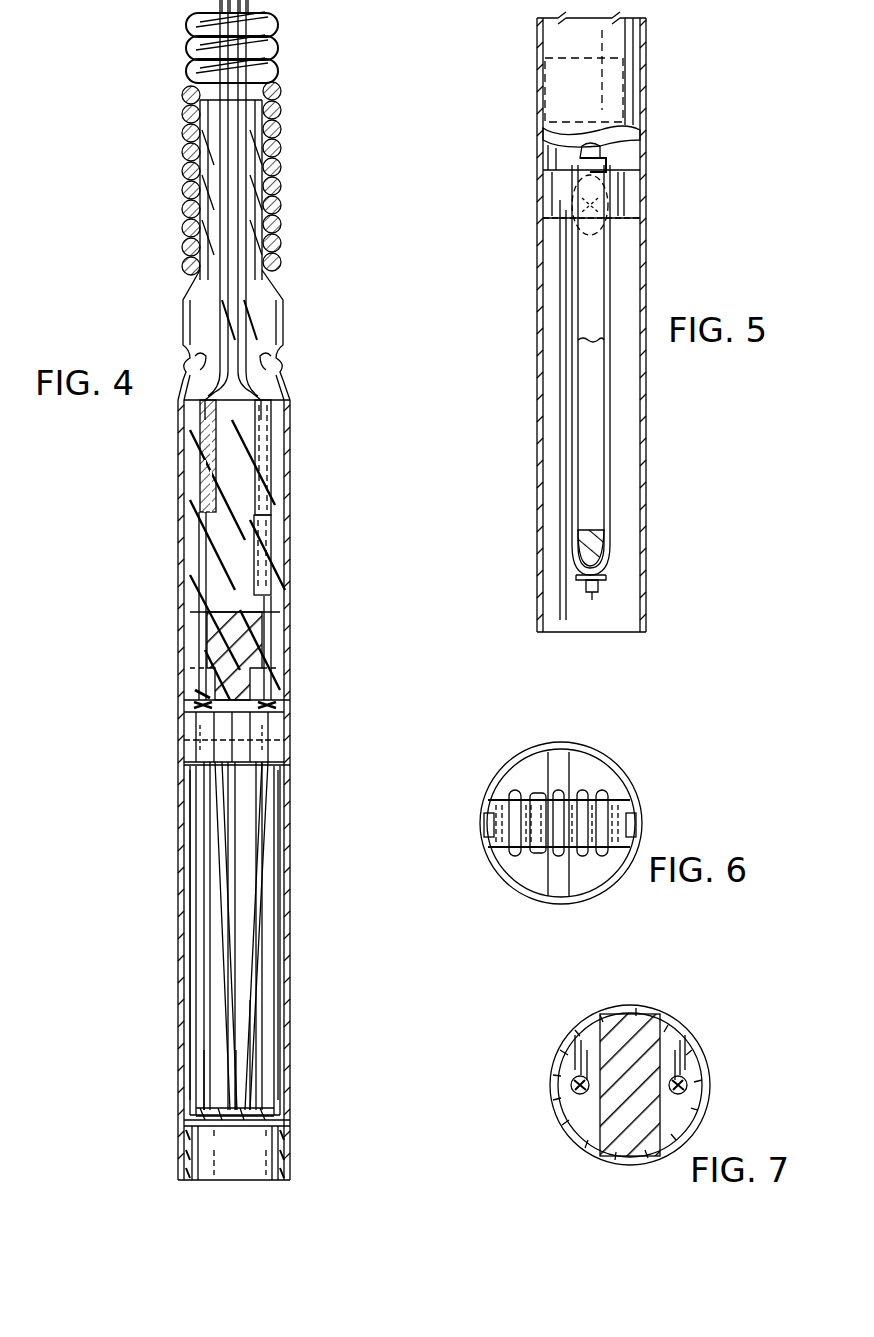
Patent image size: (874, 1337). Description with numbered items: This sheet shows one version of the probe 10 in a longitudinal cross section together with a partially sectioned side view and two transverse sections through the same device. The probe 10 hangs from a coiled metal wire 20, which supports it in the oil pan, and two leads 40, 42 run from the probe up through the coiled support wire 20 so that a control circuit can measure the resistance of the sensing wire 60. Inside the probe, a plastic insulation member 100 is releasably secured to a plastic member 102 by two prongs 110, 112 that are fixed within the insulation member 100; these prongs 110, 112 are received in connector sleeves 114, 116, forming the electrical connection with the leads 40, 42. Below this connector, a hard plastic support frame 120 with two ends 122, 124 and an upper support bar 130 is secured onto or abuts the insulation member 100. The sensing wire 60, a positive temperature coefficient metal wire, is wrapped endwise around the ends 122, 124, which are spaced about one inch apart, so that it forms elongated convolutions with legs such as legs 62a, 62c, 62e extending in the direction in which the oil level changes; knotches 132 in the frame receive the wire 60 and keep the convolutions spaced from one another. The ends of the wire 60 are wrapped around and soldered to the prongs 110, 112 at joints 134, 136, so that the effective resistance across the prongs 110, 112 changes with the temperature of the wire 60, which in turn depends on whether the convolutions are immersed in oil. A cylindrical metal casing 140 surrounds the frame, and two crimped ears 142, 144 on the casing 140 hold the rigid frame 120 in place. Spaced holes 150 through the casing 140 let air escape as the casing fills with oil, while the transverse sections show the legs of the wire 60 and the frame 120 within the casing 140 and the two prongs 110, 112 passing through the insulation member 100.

In FIG. 4, the probe 10 is at (296, 868).
In FIG. 5, the probe 10 is at (590, 322).
In FIG. 6, the probe 10 is at (584, 796).
In FIG. 7, the probe 10 is at (640, 1057).
In FIG. 4, the coiled metal wire 20 is at (284, 236).
In FIG. 4, the lead 40 is at (218, 318).
In FIG. 4, the lead 42 is at (252, 320).
In FIG. 4, the wire 60 is at (260, 992).
In FIG. 5, the wire 60 is at (568, 398).
In FIG. 6, the wire 60 is at (526, 860).
In FIG. 4, the leg 62a is at (200, 1052).
In FIG. 4, the leg 62c is at (240, 1052).
In FIG. 4, the leg 62e is at (258, 1032).
In FIG. 4, the plastic insulation member 100 is at (270, 645).
In FIG. 5, the plastic insulation member 100 is at (638, 88).
In FIG. 7, the plastic insulation member 100 is at (655, 1125).
In FIG. 4, the plastic member 102 is at (278, 500).
In FIG. 4, the prong 110 is at (199, 628).
In FIG. 5, the prong 110 is at (640, 135).
In FIG. 7, the prong 110 is at (572, 1080).
In FIG. 4, the prong 112 is at (272, 648).
In FIG. 7, the prong 112 is at (686, 1082).
In FIG. 4, the connector sleeve 114 is at (200, 555).
In FIG. 4, the connector sleeve 116 is at (265, 570).
In FIG. 4, the hard plastic support frame 120 is at (188, 880).
In FIG. 5, the hard plastic support frame 120 is at (594, 432).
In FIG. 6, the hard plastic support frame 120 is at (560, 790).
In FIG. 4, the end 122 is at (267, 743).
In FIG. 5, the end 122 is at (630, 212).
In FIG. 4, the end 124 is at (270, 1088).
In FIG. 5, the end 124 is at (606, 568).
In FIG. 6, the end 124 is at (582, 855).
In FIG. 4, the upper support bar 130 is at (226, 732).
In FIG. 5, the upper support bar 130 is at (630, 180).
In FIG. 4, the knotches 132 is at (262, 1130).
In FIG. 4, the joint 134 is at (195, 704).
In FIG. 5, the joint 134 is at (580, 156).
In FIG. 4, the joint 136 is at (268, 702).
In FIG. 4, the cylindrical metal casing 140 is at (292, 930).
In FIG. 5, the cylindrical metal casing 140 is at (537, 596).
In FIG. 6, the cylindrical metal casing 140 is at (575, 745).
In FIG. 7, the cylindrical metal casing 140 is at (625, 1010).
In FIG. 4, the crimped ear 142 is at (184, 1122).
In FIG. 6, the crimped ear 142 is at (486, 826).
In FIG. 4, the crimped ear 144 is at (280, 1135).
In FIG. 5, the crimped ear 144 is at (596, 594).
In FIG. 6, the crimped ear 144 is at (634, 828).
In FIG. 4, the spaced holes 150 is at (288, 768).
In FIG. 5, the spaced holes 150 is at (585, 232).